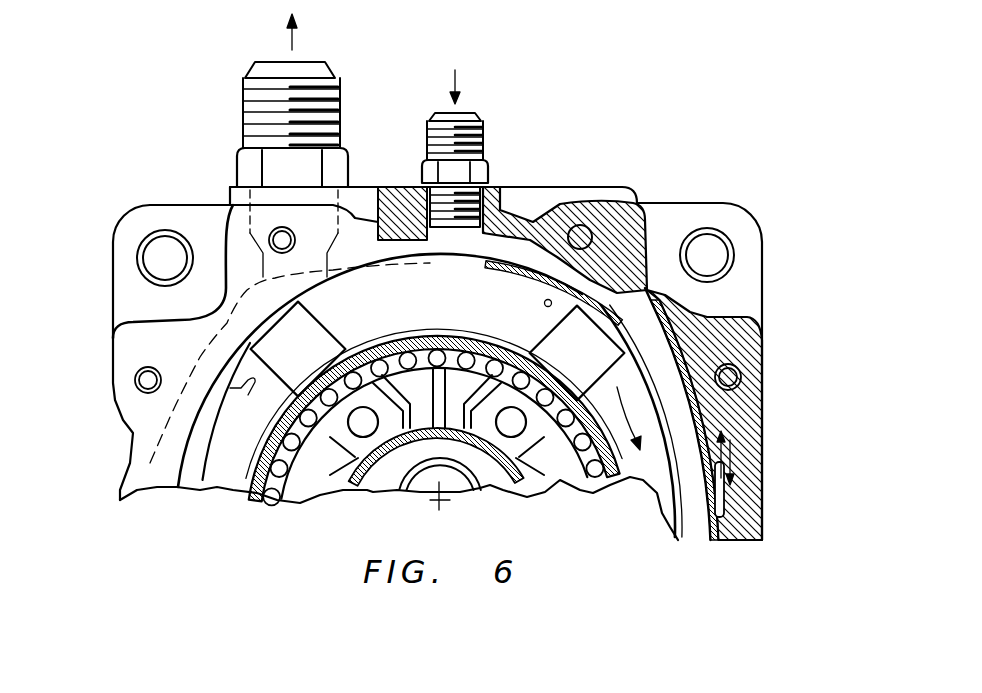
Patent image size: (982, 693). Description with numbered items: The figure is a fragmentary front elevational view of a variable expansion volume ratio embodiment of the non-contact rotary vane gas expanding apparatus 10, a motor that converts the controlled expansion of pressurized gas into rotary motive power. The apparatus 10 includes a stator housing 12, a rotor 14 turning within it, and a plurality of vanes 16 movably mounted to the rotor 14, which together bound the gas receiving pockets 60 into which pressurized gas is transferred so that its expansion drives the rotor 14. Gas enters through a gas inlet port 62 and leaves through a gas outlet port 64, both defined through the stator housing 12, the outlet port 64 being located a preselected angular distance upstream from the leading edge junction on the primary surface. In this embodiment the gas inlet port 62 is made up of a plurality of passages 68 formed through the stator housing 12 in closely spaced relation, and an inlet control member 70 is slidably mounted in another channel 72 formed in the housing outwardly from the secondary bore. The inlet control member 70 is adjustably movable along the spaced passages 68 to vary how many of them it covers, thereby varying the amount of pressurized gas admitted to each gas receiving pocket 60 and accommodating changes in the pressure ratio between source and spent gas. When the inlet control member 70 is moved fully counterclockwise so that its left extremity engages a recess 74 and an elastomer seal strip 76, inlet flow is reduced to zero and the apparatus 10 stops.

The non-contact rotary vane gas expanding apparatus 10 is at (570, 153).
The stator housing 12 is at (666, 202).
The rotor 14 is at (214, 422).
The vanes 16 is at (330, 338).
The gas receiving pockets 60 is at (248, 395).
The gas inlet port 62 is at (590, 277).
The gas outlet port 64 is at (233, 262).
The passages 68 is at (493, 263).
The inlet control member 70 is at (667, 305).
The channel 72 is at (760, 341).
The recess 74 is at (430, 280).
The elastomer seal strip 76 is at (400, 200).